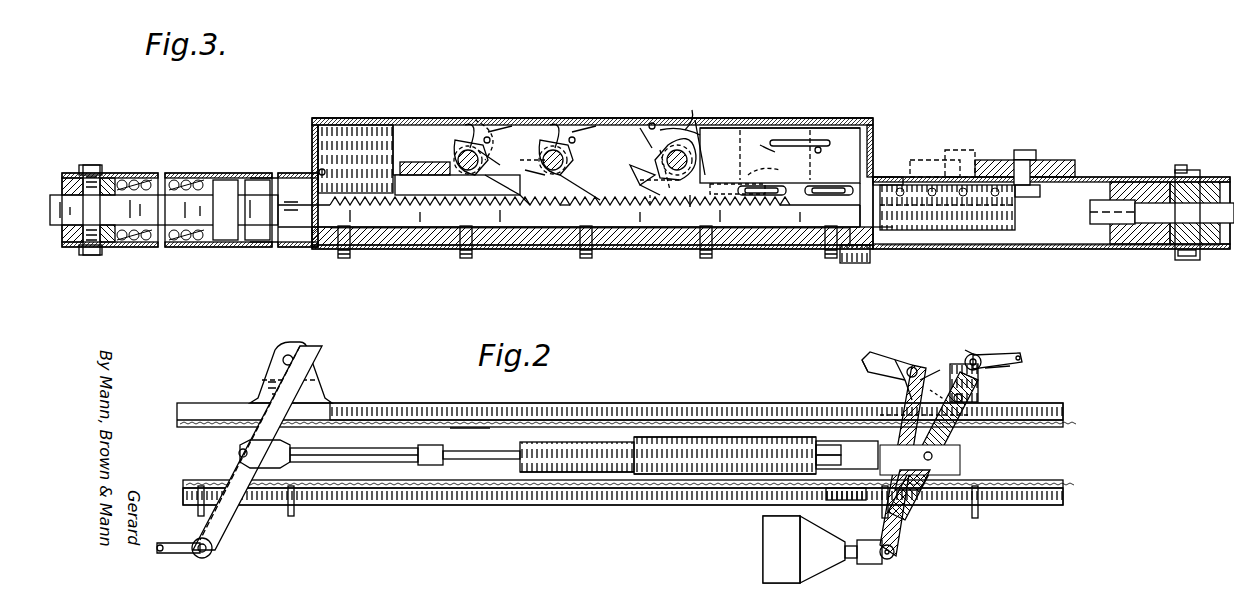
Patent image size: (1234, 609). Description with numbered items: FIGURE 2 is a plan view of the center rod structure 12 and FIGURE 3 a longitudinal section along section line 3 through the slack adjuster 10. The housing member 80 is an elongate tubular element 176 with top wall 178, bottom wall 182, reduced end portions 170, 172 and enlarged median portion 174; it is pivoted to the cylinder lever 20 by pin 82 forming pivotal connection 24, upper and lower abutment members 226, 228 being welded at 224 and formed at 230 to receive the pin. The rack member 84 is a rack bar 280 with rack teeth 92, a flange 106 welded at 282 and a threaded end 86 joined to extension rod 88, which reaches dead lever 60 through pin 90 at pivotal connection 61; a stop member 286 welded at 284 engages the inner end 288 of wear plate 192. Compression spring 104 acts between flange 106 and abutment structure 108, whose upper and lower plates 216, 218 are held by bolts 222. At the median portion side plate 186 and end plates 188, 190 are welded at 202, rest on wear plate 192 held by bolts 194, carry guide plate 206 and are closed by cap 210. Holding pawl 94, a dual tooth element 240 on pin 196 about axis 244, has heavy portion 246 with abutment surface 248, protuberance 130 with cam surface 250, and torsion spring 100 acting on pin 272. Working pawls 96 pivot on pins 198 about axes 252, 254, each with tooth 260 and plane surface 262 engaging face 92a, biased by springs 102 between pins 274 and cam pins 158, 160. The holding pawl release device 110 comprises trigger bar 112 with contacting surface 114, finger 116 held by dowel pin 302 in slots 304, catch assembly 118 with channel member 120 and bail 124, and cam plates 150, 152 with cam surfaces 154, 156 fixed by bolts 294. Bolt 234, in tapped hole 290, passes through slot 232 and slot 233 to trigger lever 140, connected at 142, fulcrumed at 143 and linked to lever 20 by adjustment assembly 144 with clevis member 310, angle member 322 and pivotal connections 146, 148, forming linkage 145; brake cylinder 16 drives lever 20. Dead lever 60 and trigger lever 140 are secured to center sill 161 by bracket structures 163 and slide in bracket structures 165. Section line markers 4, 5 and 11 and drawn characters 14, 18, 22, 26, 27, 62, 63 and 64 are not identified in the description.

In FIG. 3, the slack adjuster 10 is at (108, 252).
In FIG. 2, the slack adjuster 10 is at (752, 436).
In FIG. 3, the housing member abutment structure 108 is at (70, 170).
In FIG. 3, the lower plate 218 is at (70, 247).
In FIG. 3, the bolts 222 is at (92, 165).
In FIG. 3, the upper plate 216 is at (108, 178).
In FIG. 3, the reduced end portion 170 is at (148, 178).
In FIG. 2, the reduced end portion 170 is at (530, 474).
In FIG. 3, the slack take up compression spring 104 is at (188, 178).
In FIG. 3, the rack member abutment structure 106 is at (220, 247).
In FIG. 3, the welding 282 is at (214, 180).
In FIG. 3, the section line 4 is at (244, 167).
In FIG. 3, the rack member 84 is at (300, 200).
In FIG. 2, the rack member 84 is at (510, 440).
In FIG. 3, the top wall 178 is at (272, 172).
In FIG. 3, the rack bar 280 is at (300, 222).
In FIG. 3, the housing member 80 is at (830, 118).
In FIG. 2, the housing member 80 is at (600, 436).
In FIG. 3, the bottom wall 182 is at (395, 246).
In FIG. 3, the bolts 194 is at (344, 258).
In FIG. 3, the welding 202 is at (322, 170).
In FIG. 3, the upstanding end plate 188 is at (318, 160).
In FIG. 3, the enlarged median portion 174 is at (352, 116).
In FIG. 2, the enlarged median portion 174 is at (695, 450).
In FIG. 3, the guide plate 206 is at (405, 175).
In FIG. 3, the cam plate 152 is at (393, 172).
In FIG. 3, the rack teeth 92 is at (380, 175).
In FIG. 3, the cam surface 154 is at (455, 162).
In FIG. 3, the cam pin 160 is at (569, 212).
In FIG. 3, the cam pin 158 is at (561, 210).
In FIG. 3, the pins 198 is at (460, 150).
In FIG. 3, the working pawls 96 is at (488, 140).
In FIG. 3, the pivotal axis 254 is at (470, 120).
In FIG. 3, the section line 5 is at (462, 104).
In FIG. 3, the torsion springs 102 is at (485, 137).
In FIG. 3, the cam plate 150 is at (500, 160).
In FIG. 3, the pins 274 is at (486, 130).
In FIG. 3, the cam surface 156 is at (545, 160).
In FIG. 3, the pivotal axis 252 is at (548, 150).
In FIG. 3, the tooth 260 is at (500, 255).
In FIG. 3, the plane surface 262 is at (580, 200).
In FIG. 3, the pivotal axis 244 is at (692, 150).
In FIG. 3, the pin 196 is at (690, 160).
In FIG. 3, the relatively heavy portion 246 is at (634, 169).
In FIG. 3, the rack tooth face 92a is at (640, 167).
In FIG. 3, the upstanding side plate 186 is at (665, 135).
In FIG. 3, the holding pawl 94 is at (648, 130).
In FIG. 3, the torsion spring 100 is at (660, 125).
In FIG. 3, the pin 272 is at (680, 145).
In FIG. 3, the upright cam surface 250 is at (690, 125).
In FIG. 3, the protuberance 130 is at (700, 150).
In FIG. 3, the dual tooth element 240 is at (652, 205).
In FIG. 3, the abutment surface 248 is at (690, 205).
In FIG. 3, the channel member 120 is at (810, 128).
In FIG. 3, the holding pawl catch assembly 118 is at (790, 140).
In FIG. 3, the bail member 124 is at (775, 142).
In FIG. 3, the holding pawl contacting surface 114 is at (766, 171).
In FIG. 3, the trigger bar 112 is at (818, 147).
In FIG. 3, the finger 116 is at (765, 184).
In FIG. 3, the dowel pin 302 is at (830, 204).
In FIG. 3, the slots 304 is at (884, 76).
In FIG. 3, the cover 210 is at (845, 130).
In FIG. 2, the cover 210 is at (660, 446).
In FIG. 3, the upstanding end plate 190 is at (878, 178).
In FIG. 3, the holding pawl release device 110 is at (885, 178).
In FIG. 3, the wear plate 192 is at (800, 246).
In FIG. 3, the welding 284 is at (862, 249).
In FIG. 3, the inner end of wear plate 288 is at (852, 250).
In FIG. 3, the stop member 286 is at (886, 249).
In FIG. 3, the reduced end portion 172 is at (1092, 176).
In FIG. 2, the reduced end portion 172 is at (830, 438).
In FIG. 3, the elongate tubular element 176 is at (978, 250).
In FIG. 3, the bolts 294 is at (958, 212).
In FIG. 3, the bolt 234 is at (958, 158).
In FIG. 2, the bolt 234 is at (805, 451).
In FIG. 3, the trigger lever 140 is at (985, 158).
In FIG. 2, the trigger lever 140 is at (916, 362).
In FIG. 3, the slot 232 is at (1030, 176).
In FIG. 2, the slot 232 is at (816, 462).
In FIG. 3, the tapped hole 290 is at (1042, 192).
In FIG. 3, the upper abutment member 226 is at (1140, 180).
In FIG. 3, the welding 224 is at (1125, 182).
In FIG. 3, the cylinder lever 20 is at (1100, 212).
In FIG. 2, the cylinder lever 20 is at (905, 535).
In FIG. 3, the pin receiving formation 230 is at (1186, 212).
In FIG. 3, the pin 82 is at (1180, 250).
In FIG. 2, the pin 82 is at (965, 460).
In FIG. 3, the lower abutment member 228 is at (1190, 262).
In FIG. 2, the center sill 161 is at (612, 404).
In FIG. 2, the bracket 62 is at (306, 348).
In FIG. 2, the bracket structures 163 is at (300, 388).
In FIG. 2, the dead lever 60 is at (222, 535).
In FIG. 2, the pivot 63 is at (206, 558).
In FIG. 2, the link 64 is at (185, 555).
In FIG. 2, the pivotal connection 61 is at (238, 452).
In FIG. 2, the pin 90 is at (280, 452).
In FIG. 2, the extension rod 88 is at (355, 462).
In FIG. 2, the threaded end 86 is at (448, 452).
In FIG. 2, the center rod structure 12 is at (465, 462).
In FIG. 2, the section line 3— 3 is at (487, 440).
In FIG. 2, the bracket structures 165 is at (292, 516).
In FIG. 2, the slot 233 is at (903, 414).
In FIG. 2, the brake cylinder 16 is at (760, 550).
In FIG. 2, the fulcrum 143 is at (840, 530).
In FIG. 2, the coupling 18 is at (852, 562).
In FIG. 2, the pivot 22 is at (891, 558).
In FIG. 2, the pivotal connection 24 is at (960, 445).
In FIG. 2, the pivotal connection 148 is at (980, 384).
In FIG. 2, the link 14 is at (1012, 354).
In FIG. 2, the pin 27 is at (990, 372).
In FIG. 2, the pin 26 is at (995, 352).
In FIG. 2, the section line 11 is at (870, 358).
In FIG. 2, the linkage 145 is at (866, 352).
In FIG. 2, the bifurcated angle member 322 is at (900, 360).
In FIG. 2, the pivotal connection 146 is at (940, 372).
In FIG. 2, the clevis member 310 is at (946, 382).
In FIG. 2, the adjustment assembly 144 is at (980, 364).
In FIG. 2, the pivotal connection 142 is at (827, 490).